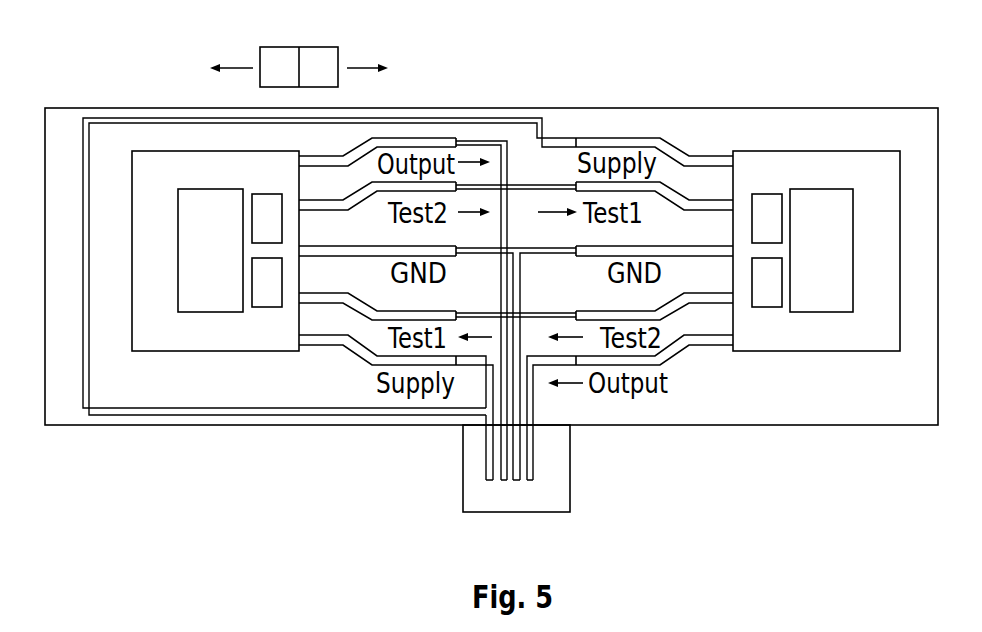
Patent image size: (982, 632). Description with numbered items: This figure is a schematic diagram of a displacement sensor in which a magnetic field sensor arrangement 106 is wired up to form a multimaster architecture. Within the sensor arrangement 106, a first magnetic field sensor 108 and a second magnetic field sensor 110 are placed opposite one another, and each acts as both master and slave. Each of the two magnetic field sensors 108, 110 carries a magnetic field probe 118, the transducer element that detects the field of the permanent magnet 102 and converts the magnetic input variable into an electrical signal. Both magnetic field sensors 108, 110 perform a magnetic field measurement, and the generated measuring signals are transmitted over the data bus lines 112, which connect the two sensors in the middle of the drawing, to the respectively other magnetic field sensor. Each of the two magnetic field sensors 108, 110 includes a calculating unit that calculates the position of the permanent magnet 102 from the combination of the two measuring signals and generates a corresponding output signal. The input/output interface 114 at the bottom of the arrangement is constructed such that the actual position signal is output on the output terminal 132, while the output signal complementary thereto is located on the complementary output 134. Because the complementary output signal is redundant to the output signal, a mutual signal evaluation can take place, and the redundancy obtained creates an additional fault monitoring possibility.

The permanent magnet 102 is at (318, 47).
The magnetic field sensor arrangement 106 is at (868, 427).
The first magnetic field sensor 108 is at (815, 150).
The second magnetic field sensor 110 is at (163, 167).
The data bus lines 112 is at (540, 182).
The input/output interface 114 is at (462, 462).
The magnetic field probe 118 is at (206, 293).
The output terminal 132 is at (533, 457).
The complementary output 134 is at (503, 482).